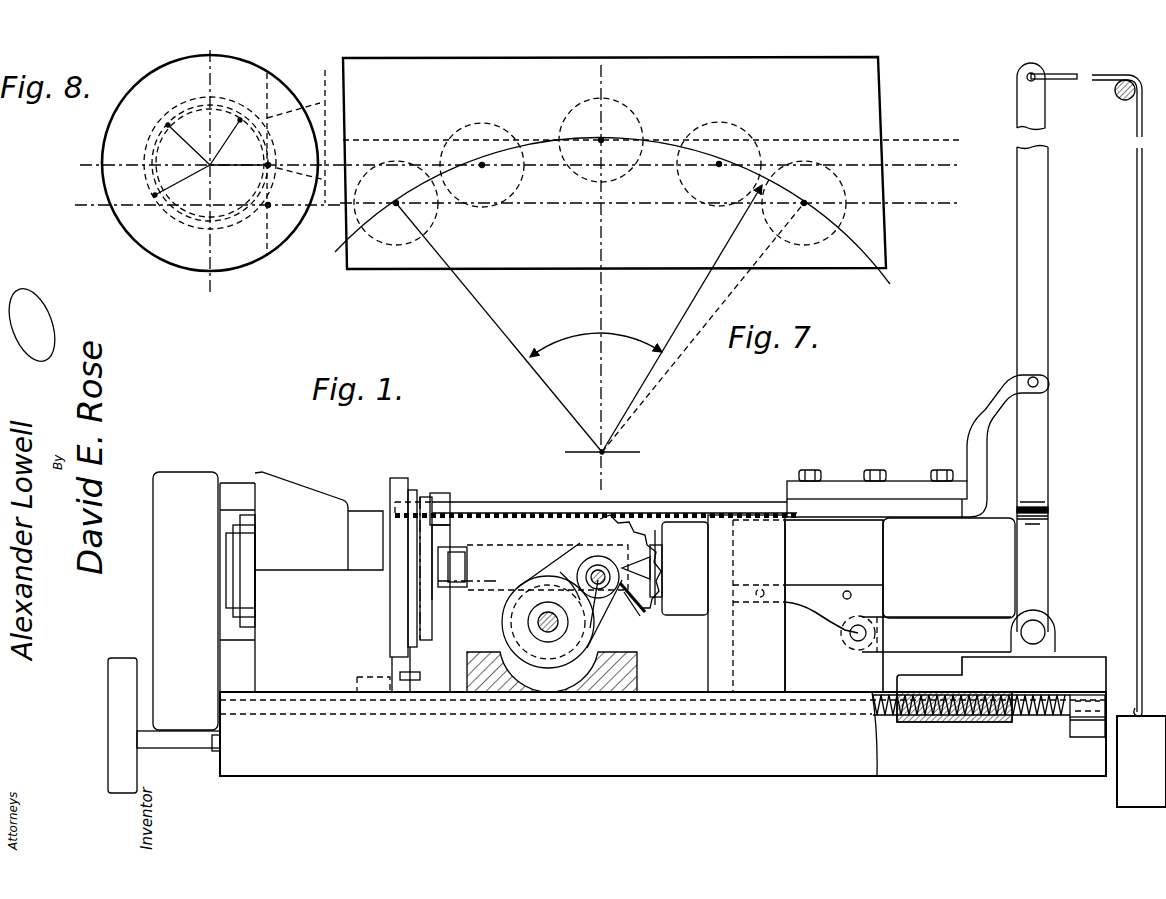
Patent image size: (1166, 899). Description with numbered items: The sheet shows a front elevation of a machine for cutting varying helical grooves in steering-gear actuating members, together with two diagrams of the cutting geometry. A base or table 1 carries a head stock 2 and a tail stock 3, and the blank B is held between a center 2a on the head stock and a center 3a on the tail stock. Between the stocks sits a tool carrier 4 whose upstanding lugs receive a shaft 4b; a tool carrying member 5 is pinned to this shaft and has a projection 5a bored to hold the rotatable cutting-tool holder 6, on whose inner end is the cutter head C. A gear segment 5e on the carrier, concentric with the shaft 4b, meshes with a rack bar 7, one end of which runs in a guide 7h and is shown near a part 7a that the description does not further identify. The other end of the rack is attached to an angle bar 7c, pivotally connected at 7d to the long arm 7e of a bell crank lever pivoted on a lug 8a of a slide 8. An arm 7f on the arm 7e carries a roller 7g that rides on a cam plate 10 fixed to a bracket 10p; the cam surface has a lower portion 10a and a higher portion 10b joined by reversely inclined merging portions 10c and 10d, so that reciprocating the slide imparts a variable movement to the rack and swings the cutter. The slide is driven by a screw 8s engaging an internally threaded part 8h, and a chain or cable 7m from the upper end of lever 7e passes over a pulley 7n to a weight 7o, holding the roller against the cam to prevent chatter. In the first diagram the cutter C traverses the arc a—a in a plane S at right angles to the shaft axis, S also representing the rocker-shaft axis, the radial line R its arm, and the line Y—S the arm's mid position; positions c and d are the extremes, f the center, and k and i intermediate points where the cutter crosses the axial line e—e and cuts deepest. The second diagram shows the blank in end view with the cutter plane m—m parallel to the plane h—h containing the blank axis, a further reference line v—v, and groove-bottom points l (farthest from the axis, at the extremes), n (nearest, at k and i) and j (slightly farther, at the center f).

In FIG. 1, the base or table 1 is at (668, 768).
In FIG. 1, the head stock 2 is at (330, 680).
In FIG. 1, the center on head stock 2a is at (460, 551).
In FIG. 1, the tail stock 3 is at (762, 675).
In FIG. 1, the center on tail stock 3a is at (626, 568).
In FIG. 1, the tool carrier 4 is at (637, 684).
In FIG. 1, the shaft 4b is at (547, 612).
In FIG. 1, the tool carrying member 5 is at (512, 628).
In FIG. 1, the projection 5a is at (640, 618).
In FIG. 1, the gear segment 5e is at (606, 532).
In FIG. 1, the cutting-tool holder 6 is at (592, 570).
In FIG. 1, the rack bar 7 is at (546, 511).
In FIG. 1, the rack guide 7a is at (440, 497).
In FIG. 1, the angle bar 7c is at (902, 490).
In FIG. 1, the pivotal connection 7d is at (1043, 381).
In FIG. 1, the long arm of bell crank lever 7e is at (1035, 320).
In FIG. 1, the arm 7f is at (920, 632).
In FIG. 1, the roller 7g is at (858, 649).
In FIG. 1, the guide 7h is at (1037, 632).
In FIG. 1, the chain or cable 7m is at (1070, 82).
In FIG. 1, the pulley 7n is at (1123, 101).
In FIG. 1, the weight 7o is at (1125, 792).
In FIG. 1, the slide 8 is at (980, 668).
In FIG. 1, the lug 8a is at (1052, 650).
In FIG. 1, the internally threaded part 8h is at (935, 722).
In FIG. 1, the screw 8s is at (1032, 717).
In FIG. 1, the cam plate 10 is at (829, 597).
In FIG. 1, the lower cam portion 10a is at (880, 612).
In FIG. 1, the higher cam portion 10b is at (760, 600).
In FIG. 1, the inclined merging cam portion 10c is at (822, 617).
In FIG. 1, the inclined merging cam portion 10d is at (798, 588).
In FIG. 1, the bracket 10p is at (877, 540).
In FIG. 8, the blank B is at (168, 268).
In FIG. 7, the blank B is at (567, 275).
In FIG. 1, the blank B is at (497, 583).
In FIG. 8, the cutter head C is at (302, 100).
In FIG. 7, the cutter head C is at (482, 123).
In FIG. 1, the cutter head C is at (605, 617).
In FIG. 7, the line Y—S Y is at (598, 277).
In FIG. 7, the rocker shaft axis S is at (610, 449).
In FIG. 7, the radial line R is at (646, 318).
In FIG. 7, the arc line a— a is at (609, 211).
In FIG. 7, the extreme cutter position c is at (395, 201).
In FIG. 7, the intermediate cutter position k is at (481, 164).
In FIG. 7, the central cutter position f is at (602, 140).
In FIG. 7, the intermediate cutter position i is at (718, 164).
In FIG. 7, the extreme cutter position d is at (805, 203).
In FIG. 8, the axial line e— e is at (200, 164).
In FIG. 7, the axial line e— e is at (650, 153).
In FIG. 8, the reference line v is at (200, 204).
In FIG. 7, the reference line v is at (642, 204).
In FIG. 8, the plane line h— h is at (202, 182).
In FIG. 8, the plane line m— m is at (275, 163).
In FIG. 8, the groove bottom point n is at (266, 167).
In FIG. 8, the groove bottom point l is at (270, 208).
In FIG. 8, the groove bottom point j is at (270, 148).